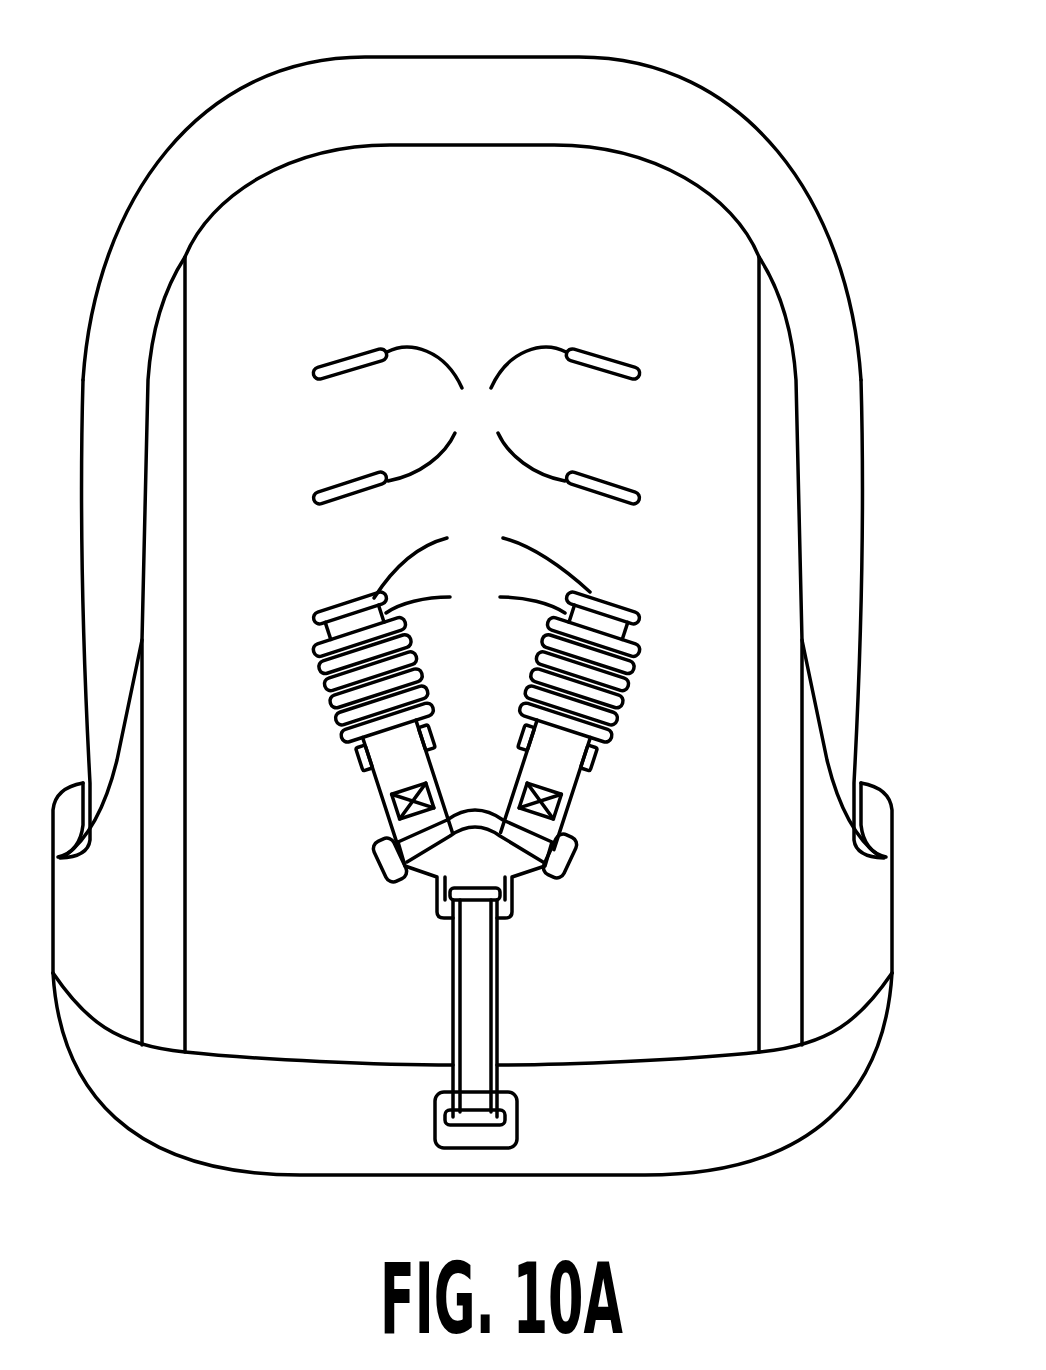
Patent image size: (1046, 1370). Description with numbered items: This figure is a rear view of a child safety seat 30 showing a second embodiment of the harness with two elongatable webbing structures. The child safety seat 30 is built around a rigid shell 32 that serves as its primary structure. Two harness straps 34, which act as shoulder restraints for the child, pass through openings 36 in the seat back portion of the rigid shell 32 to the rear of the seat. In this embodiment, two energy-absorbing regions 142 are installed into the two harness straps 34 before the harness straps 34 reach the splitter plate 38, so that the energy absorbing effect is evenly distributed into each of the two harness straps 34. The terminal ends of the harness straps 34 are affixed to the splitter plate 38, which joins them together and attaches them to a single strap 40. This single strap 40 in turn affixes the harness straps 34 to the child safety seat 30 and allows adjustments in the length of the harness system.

The child safety seat 30 is at (776, 87).
The rigid shell 32 is at (565, 170).
The harness straps 34 is at (475, 598).
The openings 36 is at (476, 472).
The splitter plate 38 is at (553, 879).
The single strap 40 is at (478, 982).
The energy-absorbing regions 142 is at (340, 685).